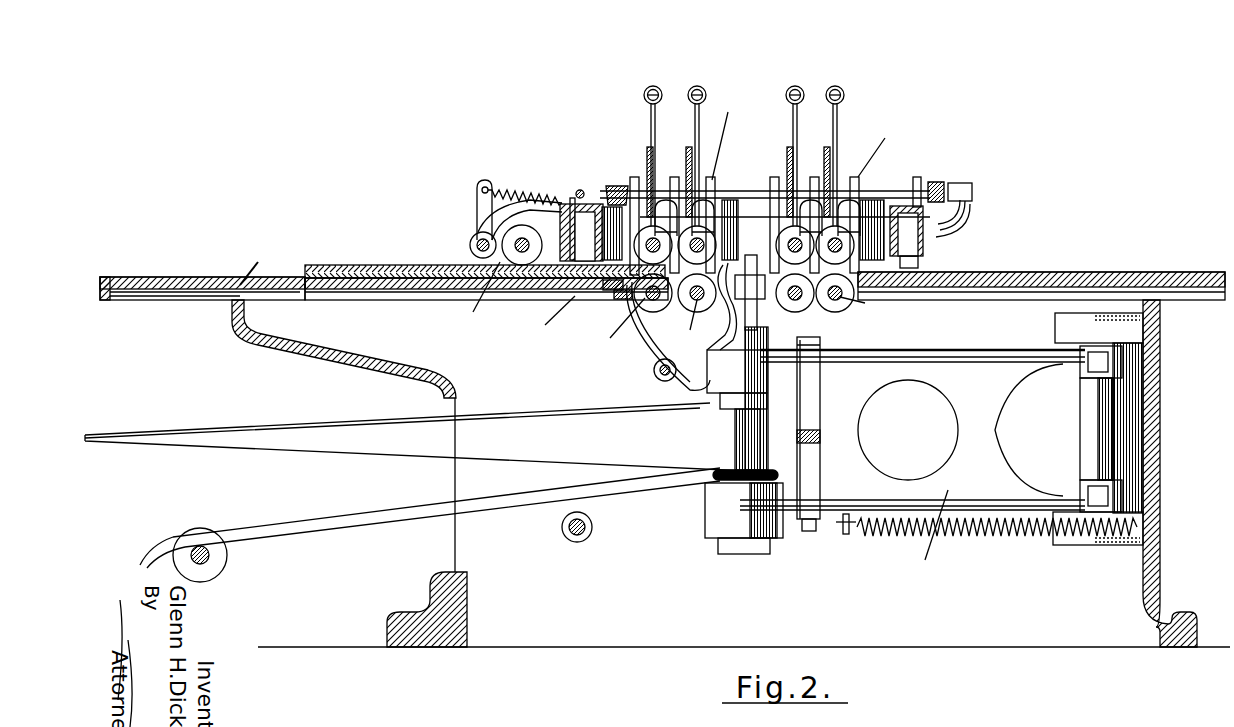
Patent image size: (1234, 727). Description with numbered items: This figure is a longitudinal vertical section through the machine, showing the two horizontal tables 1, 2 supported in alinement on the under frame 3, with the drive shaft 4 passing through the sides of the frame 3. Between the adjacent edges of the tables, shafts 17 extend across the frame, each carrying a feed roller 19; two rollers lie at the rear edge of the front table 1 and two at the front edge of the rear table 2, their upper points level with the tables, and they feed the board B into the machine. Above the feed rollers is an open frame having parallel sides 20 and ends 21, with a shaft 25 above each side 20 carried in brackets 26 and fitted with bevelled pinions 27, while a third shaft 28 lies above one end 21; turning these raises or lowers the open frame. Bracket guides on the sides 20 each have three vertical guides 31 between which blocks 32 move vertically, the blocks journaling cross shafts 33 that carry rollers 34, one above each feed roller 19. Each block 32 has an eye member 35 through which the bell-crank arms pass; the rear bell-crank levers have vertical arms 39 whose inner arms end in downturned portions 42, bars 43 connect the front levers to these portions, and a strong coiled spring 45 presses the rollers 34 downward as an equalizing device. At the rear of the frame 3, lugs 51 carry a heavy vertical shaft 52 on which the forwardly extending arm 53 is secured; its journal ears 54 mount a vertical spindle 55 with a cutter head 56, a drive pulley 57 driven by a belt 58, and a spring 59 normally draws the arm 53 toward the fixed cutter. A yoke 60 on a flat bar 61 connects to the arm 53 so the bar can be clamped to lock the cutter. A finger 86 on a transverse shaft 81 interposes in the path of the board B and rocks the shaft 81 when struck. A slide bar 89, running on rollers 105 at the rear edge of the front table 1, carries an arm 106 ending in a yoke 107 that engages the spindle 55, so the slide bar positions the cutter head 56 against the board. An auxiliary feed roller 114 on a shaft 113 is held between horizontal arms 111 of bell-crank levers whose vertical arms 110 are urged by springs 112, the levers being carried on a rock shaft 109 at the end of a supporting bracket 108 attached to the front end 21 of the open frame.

The front table 1 is at (256, 262).
The rear table 2 is at (995, 275).
The under frame 3 is at (1160, 437).
The drive shaft 4 is at (576, 548).
The shaft 17 is at (740, 325).
The feed roller 19 is at (655, 302).
The side of open frame 20 is at (740, 200).
The end of open frame 21 is at (586, 204).
The shaft 25 is at (936, 182).
The bracket 26 is at (958, 218).
The bevelled pinion 27 is at (616, 185).
The third shaft 28 is at (578, 190).
The vertical guide 31 is at (634, 177).
The block 32 is at (809, 136).
The cross shaft 33 is at (648, 245).
The roller 34 is at (715, 245).
The eye member 35 is at (770, 205).
The vertical arm 39 is at (656, 127).
The downturned portion 42 is at (703, 170).
The bar 43 is at (652, 168).
The coiled spring 45 is at (694, 88).
The lug 51 is at (1056, 328).
The vertical shaft 52 is at (1088, 410).
The arm 53 is at (924, 537).
The journal ear 54 is at (715, 395).
The vertical spindle 55 is at (760, 312).
The cutter head 56 is at (762, 269).
The drive pulley 57 is at (770, 407).
The belt 58 is at (538, 487).
The spring 59 is at (892, 538).
The yoke 60 is at (822, 378).
The flat bar 61 is at (822, 440).
The shaft 81 is at (658, 380).
The finger 86 is at (718, 352).
The slide bar 89 is at (549, 320).
The roller 105 is at (610, 292).
The arm 106 is at (638, 362).
The yoke 107 is at (735, 412).
The supporting bracket 108 is at (480, 225).
The rock shaft 109 is at (470, 246).
The vertical arm 110 is at (476, 195).
The horizontal arm 111 is at (472, 297).
The spring 112 is at (510, 192).
The shaft 113 is at (522, 265).
The roller 114 is at (560, 300).
The board B is at (330, 265).